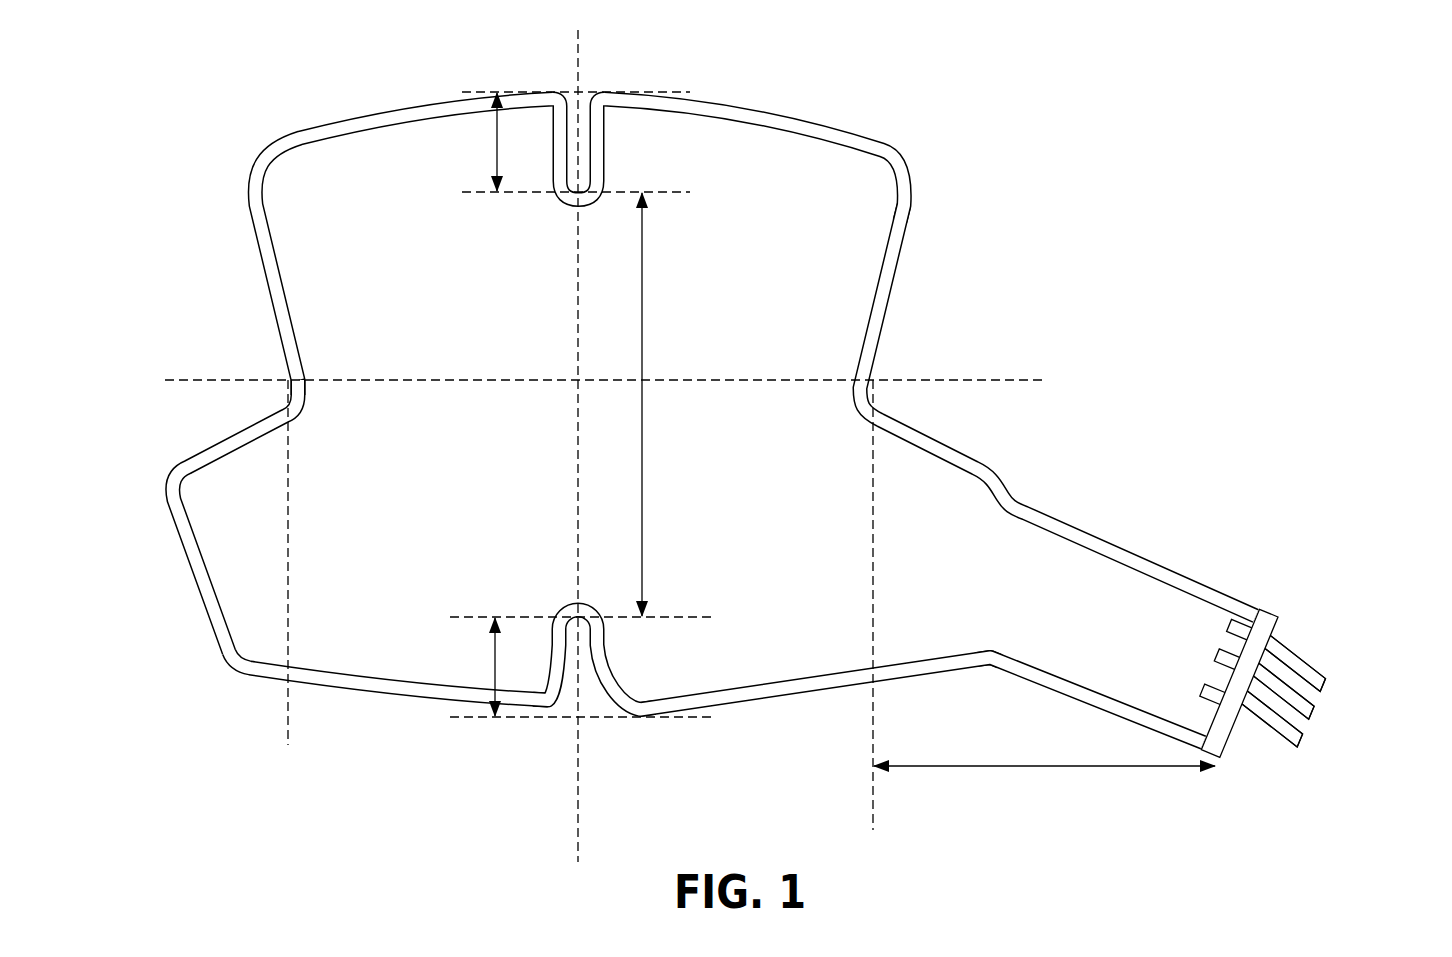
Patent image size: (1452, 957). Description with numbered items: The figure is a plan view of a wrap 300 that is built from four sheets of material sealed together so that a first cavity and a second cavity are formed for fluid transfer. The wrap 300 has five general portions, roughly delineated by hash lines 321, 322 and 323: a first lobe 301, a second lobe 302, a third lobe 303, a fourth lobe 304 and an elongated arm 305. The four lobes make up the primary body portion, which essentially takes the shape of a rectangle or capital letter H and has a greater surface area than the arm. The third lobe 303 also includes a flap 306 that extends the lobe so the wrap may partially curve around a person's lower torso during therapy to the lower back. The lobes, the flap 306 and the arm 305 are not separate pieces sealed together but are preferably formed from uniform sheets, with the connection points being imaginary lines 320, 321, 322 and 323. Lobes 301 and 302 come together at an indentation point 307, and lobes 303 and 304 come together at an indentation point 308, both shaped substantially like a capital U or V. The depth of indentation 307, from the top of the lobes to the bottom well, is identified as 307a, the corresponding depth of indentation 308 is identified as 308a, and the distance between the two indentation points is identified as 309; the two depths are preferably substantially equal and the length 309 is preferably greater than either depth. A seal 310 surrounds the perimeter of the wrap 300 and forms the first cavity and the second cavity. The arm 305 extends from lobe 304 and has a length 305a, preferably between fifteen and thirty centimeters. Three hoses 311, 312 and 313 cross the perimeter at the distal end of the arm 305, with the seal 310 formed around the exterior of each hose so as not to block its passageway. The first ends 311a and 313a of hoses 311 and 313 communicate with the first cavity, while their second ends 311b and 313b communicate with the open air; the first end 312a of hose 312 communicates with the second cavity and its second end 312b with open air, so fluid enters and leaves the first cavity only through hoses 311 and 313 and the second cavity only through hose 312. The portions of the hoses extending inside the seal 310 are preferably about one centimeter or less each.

The wrap 300 is at (1045, 155).
The first lobe 301 is at (905, 160).
The second lobe 302 is at (286, 137).
The third lobe 303 is at (339, 689).
The fourth lobe 304 is at (764, 702).
The elongated arm 305 is at (1162, 633).
The length of arm 305a is at (1044, 802).
The flap 306 is at (186, 584).
The indentation point 307 is at (572, 97).
The depth of indentation 307a is at (549, 142).
The indentation point 308 is at (564, 689).
The depth of indentation 308a is at (566, 667).
The distance between indentation points 309 is at (683, 404).
The seal 310 is at (880, 281).
The hose 311 is at (1276, 659).
The first end of hose 311a is at (1231, 626).
The second end of hose 311b is at (1340, 690).
The hose 312 is at (1265, 726).
The first end of hose 312a is at (1219, 655).
The second end of hose 312b is at (1321, 715).
The hose 313 is at (1201, 743).
The first end of hose 313a is at (1206, 689).
The second end of hose 313b is at (1293, 738).
The imaginary line 320 is at (578, 292).
The hash line 321 is at (388, 383).
The hash line 322 is at (873, 590).
The hash line 323 is at (290, 545).